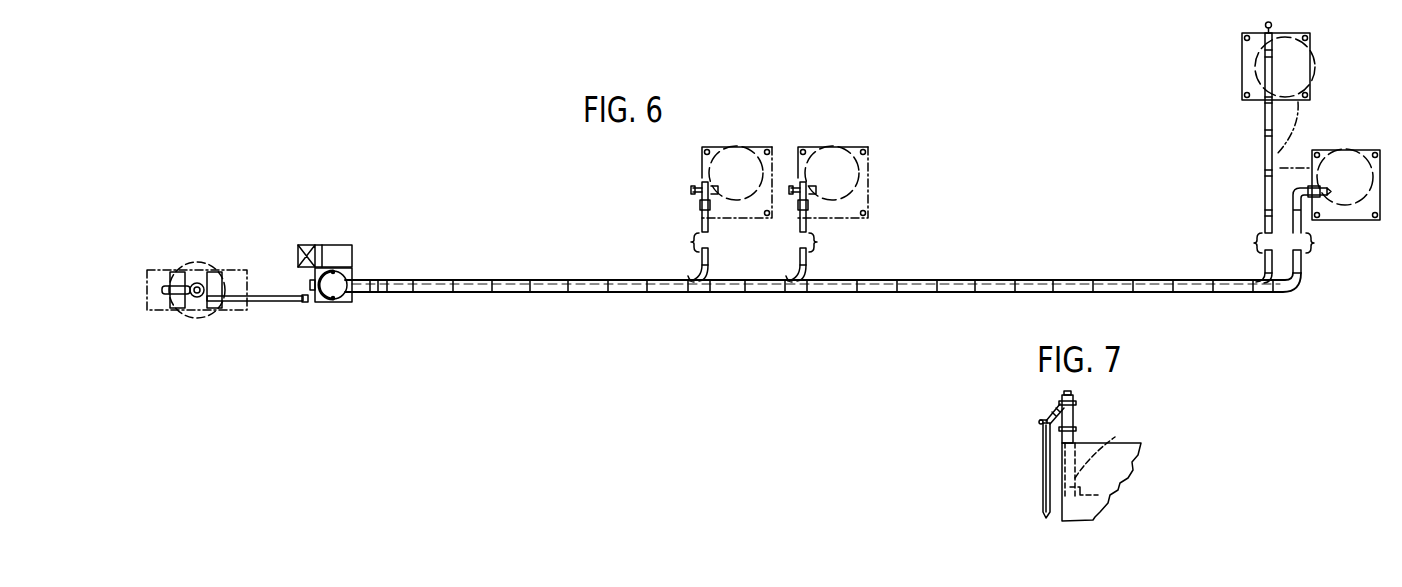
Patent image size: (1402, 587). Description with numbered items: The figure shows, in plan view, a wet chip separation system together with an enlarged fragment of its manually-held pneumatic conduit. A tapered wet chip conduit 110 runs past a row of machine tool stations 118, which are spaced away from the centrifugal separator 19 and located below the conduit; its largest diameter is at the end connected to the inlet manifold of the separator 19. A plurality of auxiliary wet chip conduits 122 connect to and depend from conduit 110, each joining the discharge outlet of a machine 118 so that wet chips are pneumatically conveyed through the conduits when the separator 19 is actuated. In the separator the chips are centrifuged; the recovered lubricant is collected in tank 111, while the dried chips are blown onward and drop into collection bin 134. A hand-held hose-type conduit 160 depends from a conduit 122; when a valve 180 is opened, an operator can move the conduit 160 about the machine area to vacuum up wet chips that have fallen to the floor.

In FIG. 6, the centrifugal separator 19 is at (333, 303).
In FIG. 6, the wet chip conduit 110 is at (542, 293).
In FIG. 6, the tank 111 is at (333, 244).
In FIG. 6, the machine tool stations 118 is at (815, 142).
In FIG. 6, the auxiliary wet chip conduits 122 is at (797, 262).
In FIG. 7, the auxiliary wet chip conduits 122 is at (1115, 437).
In FIG. 6, the collection bin 134 is at (245, 312).
In FIG. 7, the manually-held hose-type conduit 160 is at (1043, 480).
In FIG. 7, the valve 180 is at (1040, 424).